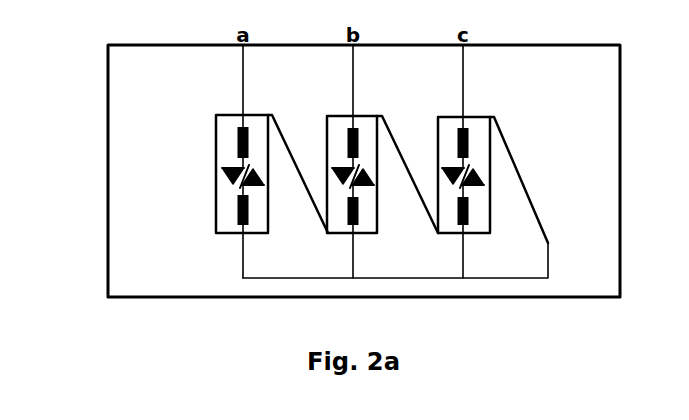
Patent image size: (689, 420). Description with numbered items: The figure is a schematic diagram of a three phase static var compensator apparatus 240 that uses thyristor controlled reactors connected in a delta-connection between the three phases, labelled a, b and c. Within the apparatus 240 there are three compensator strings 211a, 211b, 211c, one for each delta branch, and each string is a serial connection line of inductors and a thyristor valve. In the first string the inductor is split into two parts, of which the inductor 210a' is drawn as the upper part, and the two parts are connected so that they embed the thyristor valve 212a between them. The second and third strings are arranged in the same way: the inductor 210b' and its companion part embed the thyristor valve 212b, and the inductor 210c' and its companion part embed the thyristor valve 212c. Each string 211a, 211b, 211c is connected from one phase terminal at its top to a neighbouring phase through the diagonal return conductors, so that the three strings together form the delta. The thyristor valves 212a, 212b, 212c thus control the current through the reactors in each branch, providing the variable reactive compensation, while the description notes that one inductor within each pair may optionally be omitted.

The three phase static var compensator apparatus 240 is at (180, 45).
The compensator string 211a is at (218, 236).
The compensator string 211b is at (333, 237).
The compensator string 211c is at (445, 237).
The inductor 210a' is at (288, 122).
The inductor 210b' is at (403, 121).
The inductor 210c' is at (515, 133).
The thyristor valve 212a is at (222, 176).
The thyristor valve 212b is at (392, 190).
The thyristor valve 212c is at (483, 178).